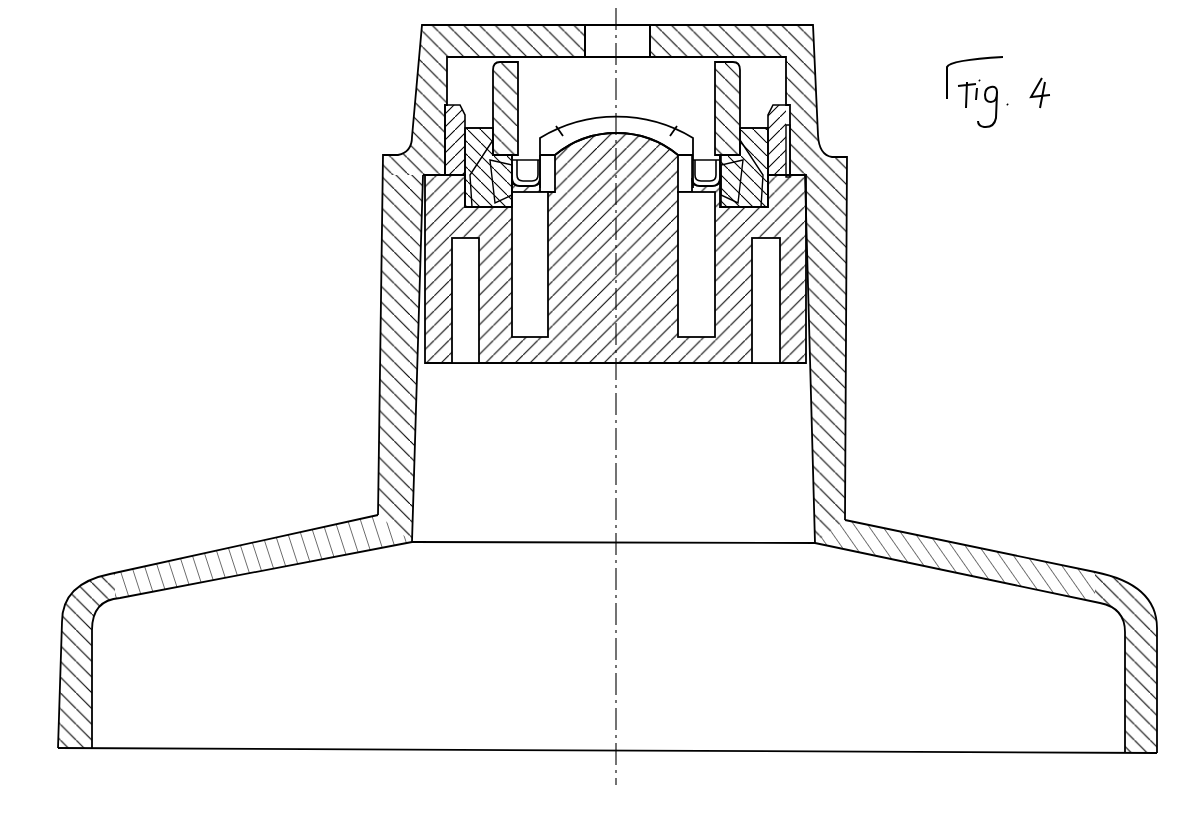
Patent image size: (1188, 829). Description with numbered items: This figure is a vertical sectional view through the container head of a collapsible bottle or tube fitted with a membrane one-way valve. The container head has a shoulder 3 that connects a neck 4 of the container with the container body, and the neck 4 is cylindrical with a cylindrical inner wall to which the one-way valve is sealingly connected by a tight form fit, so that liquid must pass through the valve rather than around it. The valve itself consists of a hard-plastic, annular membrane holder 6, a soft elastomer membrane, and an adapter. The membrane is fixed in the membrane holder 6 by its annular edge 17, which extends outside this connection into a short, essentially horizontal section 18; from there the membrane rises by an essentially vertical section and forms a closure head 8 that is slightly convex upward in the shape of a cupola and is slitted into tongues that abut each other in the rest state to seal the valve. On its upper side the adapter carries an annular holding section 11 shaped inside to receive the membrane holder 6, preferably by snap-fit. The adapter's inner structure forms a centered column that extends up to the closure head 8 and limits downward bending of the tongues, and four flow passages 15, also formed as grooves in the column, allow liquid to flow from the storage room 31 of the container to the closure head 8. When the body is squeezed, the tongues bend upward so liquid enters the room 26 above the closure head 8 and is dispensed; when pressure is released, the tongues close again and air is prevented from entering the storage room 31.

The shoulder 3 is at (216, 558).
The neck 4 is at (385, 321).
The membrane holder 6 is at (503, 95).
The closure head 8 is at (588, 116).
The annular holding section 11 is at (790, 157).
The flow passages 15 is at (537, 318).
The annular edge 17 is at (505, 196).
The horizontal section 18 is at (529, 190).
The room above the closure head 26 is at (692, 88).
The storage room 31 is at (688, 656).